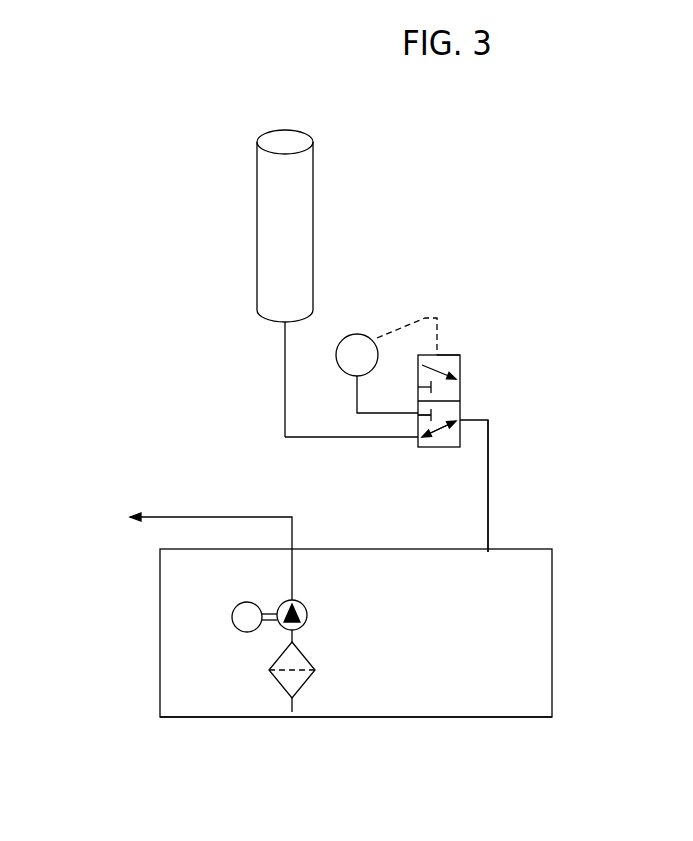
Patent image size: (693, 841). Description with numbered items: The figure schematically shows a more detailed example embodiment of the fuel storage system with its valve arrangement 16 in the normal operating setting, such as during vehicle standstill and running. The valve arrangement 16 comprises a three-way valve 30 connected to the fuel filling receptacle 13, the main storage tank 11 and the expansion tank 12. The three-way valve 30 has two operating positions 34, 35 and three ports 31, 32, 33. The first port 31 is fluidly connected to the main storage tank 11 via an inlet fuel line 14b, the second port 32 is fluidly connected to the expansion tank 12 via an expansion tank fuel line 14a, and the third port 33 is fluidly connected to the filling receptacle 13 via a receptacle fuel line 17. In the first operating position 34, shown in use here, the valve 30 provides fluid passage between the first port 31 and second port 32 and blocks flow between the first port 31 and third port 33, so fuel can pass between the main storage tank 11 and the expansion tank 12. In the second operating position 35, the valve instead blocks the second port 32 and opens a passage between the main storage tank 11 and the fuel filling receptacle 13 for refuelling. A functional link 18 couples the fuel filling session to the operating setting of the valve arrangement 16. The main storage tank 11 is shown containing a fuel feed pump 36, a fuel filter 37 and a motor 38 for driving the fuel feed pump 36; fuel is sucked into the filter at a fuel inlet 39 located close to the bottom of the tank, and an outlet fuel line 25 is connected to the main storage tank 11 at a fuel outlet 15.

The main storage tank 11 is at (527, 563).
The expansion tank 12 is at (303, 305).
The fuel filling receptacle 13 is at (360, 343).
The expansion tank fuel line 14a is at (285, 365).
The inlet fuel line 14b is at (489, 434).
The fuel outlet 15 is at (293, 550).
The valve arrangement 16 is at (544, 373).
The receptacle fuel line 17 is at (353, 395).
The functional link 18 is at (437, 330).
The outlet fuel line 25 is at (180, 518).
The three-way valve 30 is at (439, 401).
The first port 31 is at (461, 420).
The second port 32 is at (417, 440).
The third port 33 is at (418, 413).
The first operating position 34 is at (447, 438).
The second operating position 35 is at (458, 355).
The fuel feed pump 36 is at (295, 623).
The fuel filter 37 is at (297, 682).
The motor 38 is at (256, 628).
The fuel inlet 39 is at (292, 707).